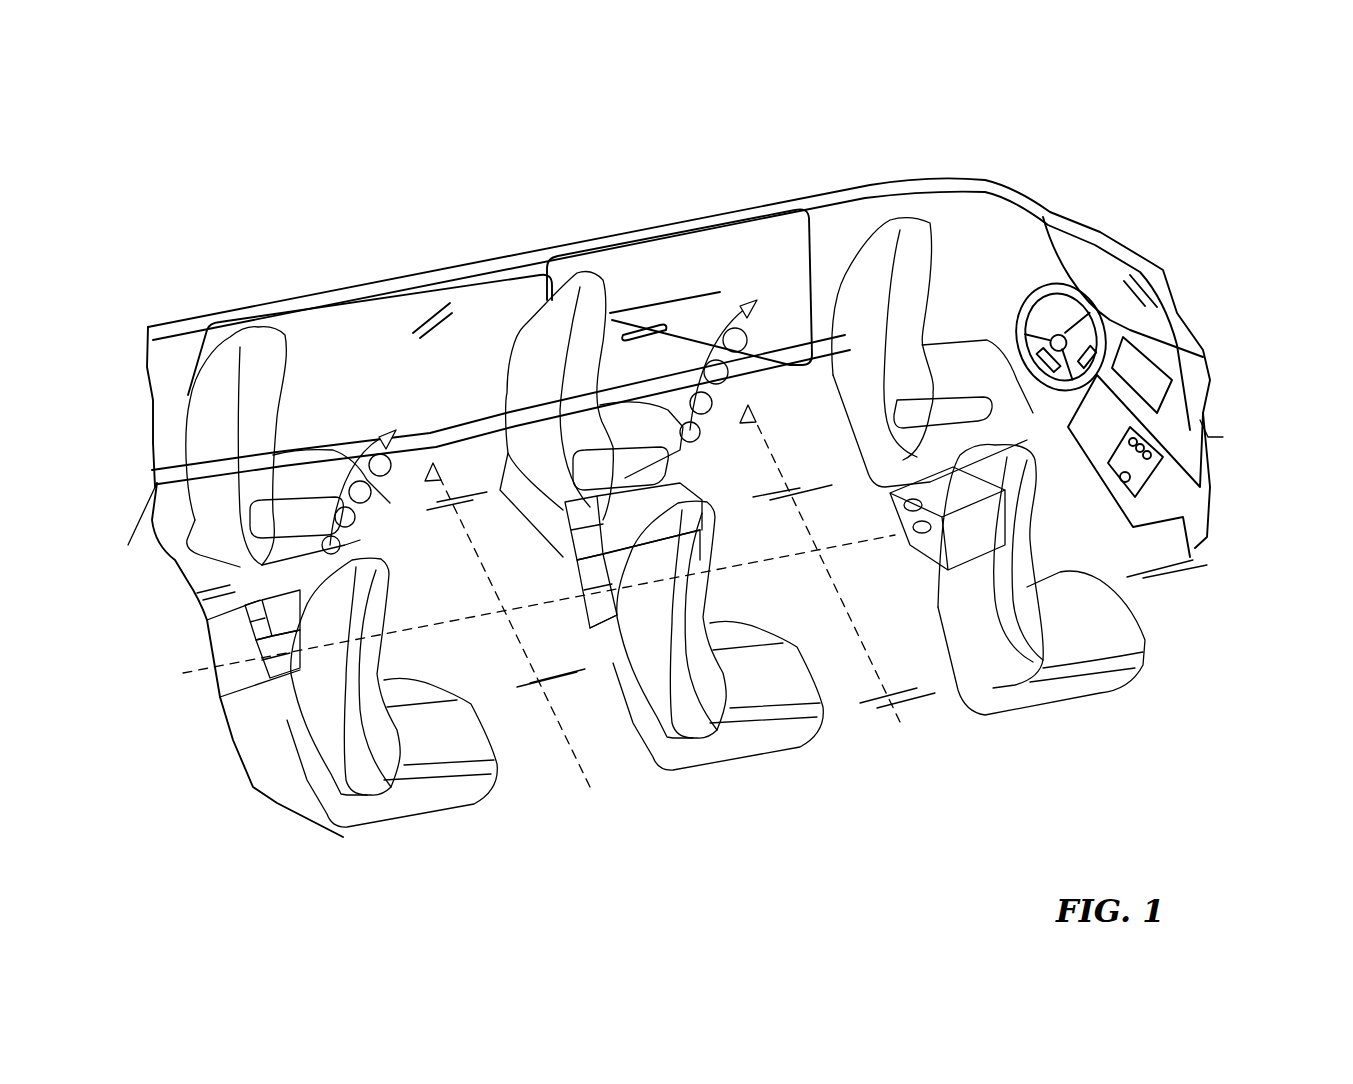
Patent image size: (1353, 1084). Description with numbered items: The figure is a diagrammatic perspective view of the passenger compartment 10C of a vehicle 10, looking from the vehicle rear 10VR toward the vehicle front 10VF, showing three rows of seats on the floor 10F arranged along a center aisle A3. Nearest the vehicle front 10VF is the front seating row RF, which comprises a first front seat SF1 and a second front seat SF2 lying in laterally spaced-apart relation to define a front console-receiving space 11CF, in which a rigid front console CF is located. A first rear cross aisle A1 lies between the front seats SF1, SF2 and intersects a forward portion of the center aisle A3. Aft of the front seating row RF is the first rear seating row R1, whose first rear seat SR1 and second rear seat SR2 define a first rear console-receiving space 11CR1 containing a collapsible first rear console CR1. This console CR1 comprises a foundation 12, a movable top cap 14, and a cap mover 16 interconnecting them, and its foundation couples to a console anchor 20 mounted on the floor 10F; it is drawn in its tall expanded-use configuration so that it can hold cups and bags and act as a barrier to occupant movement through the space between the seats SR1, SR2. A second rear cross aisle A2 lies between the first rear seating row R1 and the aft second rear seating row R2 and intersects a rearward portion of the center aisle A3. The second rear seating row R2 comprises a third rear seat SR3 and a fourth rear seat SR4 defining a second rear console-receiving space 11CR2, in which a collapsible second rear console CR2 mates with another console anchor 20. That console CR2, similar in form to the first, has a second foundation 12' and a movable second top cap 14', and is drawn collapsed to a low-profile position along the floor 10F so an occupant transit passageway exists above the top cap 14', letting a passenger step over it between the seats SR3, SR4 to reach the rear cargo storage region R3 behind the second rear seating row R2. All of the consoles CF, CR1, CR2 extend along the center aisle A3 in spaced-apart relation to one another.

The vehicle 10 is at (1197, 77).
The passenger compartment 10C is at (170, 178).
The vehicle rear 10VR is at (118, 547).
The vehicle front 10VF is at (1270, 402).
The floor 10F is at (440, 575).
The front console-receiving space 11CF is at (1047, 440).
The first rear console-receiving space 11CR1 is at (745, 530).
The second rear console-receiving space 11CR2 is at (420, 612).
The foundation 12 is at (620, 604).
The second foundation 12' is at (300, 685).
The movable top cap 14 is at (633, 487).
The movable second top cap 14' is at (272, 554).
The cap mover 16 is at (605, 627).
The console anchor 20 is at (478, 596).
The collapsible first rear console CR1 is at (598, 367).
The collapsible second rear console CR2 is at (286, 391).
The rigid front console CF is at (1258, 158).
The first front seat SF1 is at (1210, 647).
The second front seat SF2 is at (873, 232).
The first rear seat SR1 is at (797, 920).
The second rear seat SR2 is at (465, 222).
The third rear seat SR3 is at (322, 754).
The fourth rear seat SR4 is at (140, 280).
The first rear seating row R1 is at (642, 509).
The second rear seating row R2 is at (362, 497).
The rear cargo storage region R3 is at (125, 872).
The front seating row RF is at (1086, 466).
The first rear cross aisle A1 is at (1010, 793).
The second rear cross aisle A2 is at (503, 840).
The center aisle A3 is at (95, 707).